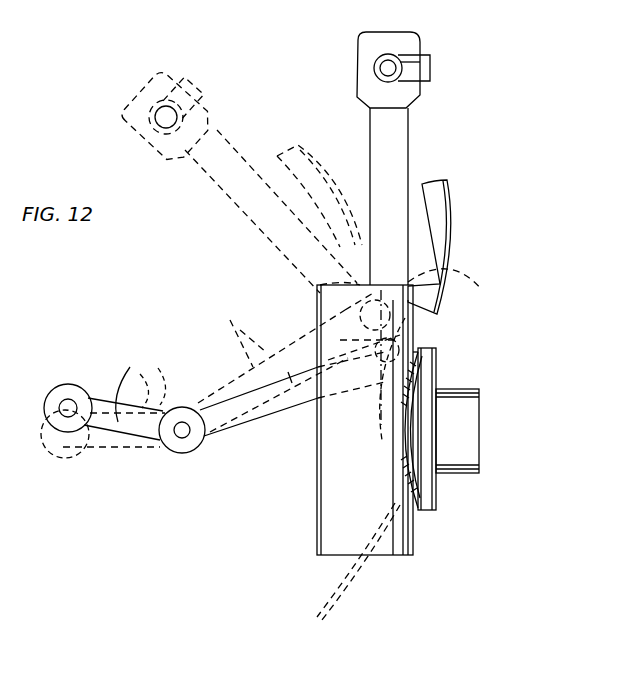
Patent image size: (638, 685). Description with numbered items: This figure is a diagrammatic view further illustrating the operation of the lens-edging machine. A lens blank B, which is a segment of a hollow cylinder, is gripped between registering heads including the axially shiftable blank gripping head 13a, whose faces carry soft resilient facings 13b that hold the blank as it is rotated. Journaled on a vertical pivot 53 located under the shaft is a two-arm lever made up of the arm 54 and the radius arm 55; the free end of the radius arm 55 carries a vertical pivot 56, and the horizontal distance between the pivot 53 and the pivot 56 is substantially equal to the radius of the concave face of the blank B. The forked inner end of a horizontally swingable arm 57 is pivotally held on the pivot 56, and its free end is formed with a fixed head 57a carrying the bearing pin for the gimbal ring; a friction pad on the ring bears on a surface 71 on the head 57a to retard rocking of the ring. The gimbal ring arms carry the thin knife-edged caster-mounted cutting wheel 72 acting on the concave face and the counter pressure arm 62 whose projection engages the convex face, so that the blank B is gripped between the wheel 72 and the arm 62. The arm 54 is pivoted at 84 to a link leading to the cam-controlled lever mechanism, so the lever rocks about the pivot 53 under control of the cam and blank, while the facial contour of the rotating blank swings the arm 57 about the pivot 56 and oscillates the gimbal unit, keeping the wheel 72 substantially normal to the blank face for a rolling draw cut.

The blank B is at (346, 518).
The fixed head 57a is at (176, 72).
The surface or element 71 is at (431, 61).
The horizontally swingable arm 57 is at (392, 144).
The arm 62 is at (443, 232).
The cutting wheel 72 is at (318, 285).
The blank gripping head 13a is at (436, 360).
The resilient facings 13b is at (399, 456).
The radius arm 55 is at (253, 447).
The vertical pivot 56 is at (372, 373).
The arm 54 is at (103, 424).
The pivot 84 is at (67, 405).
The vertical pivot 53 is at (182, 432).